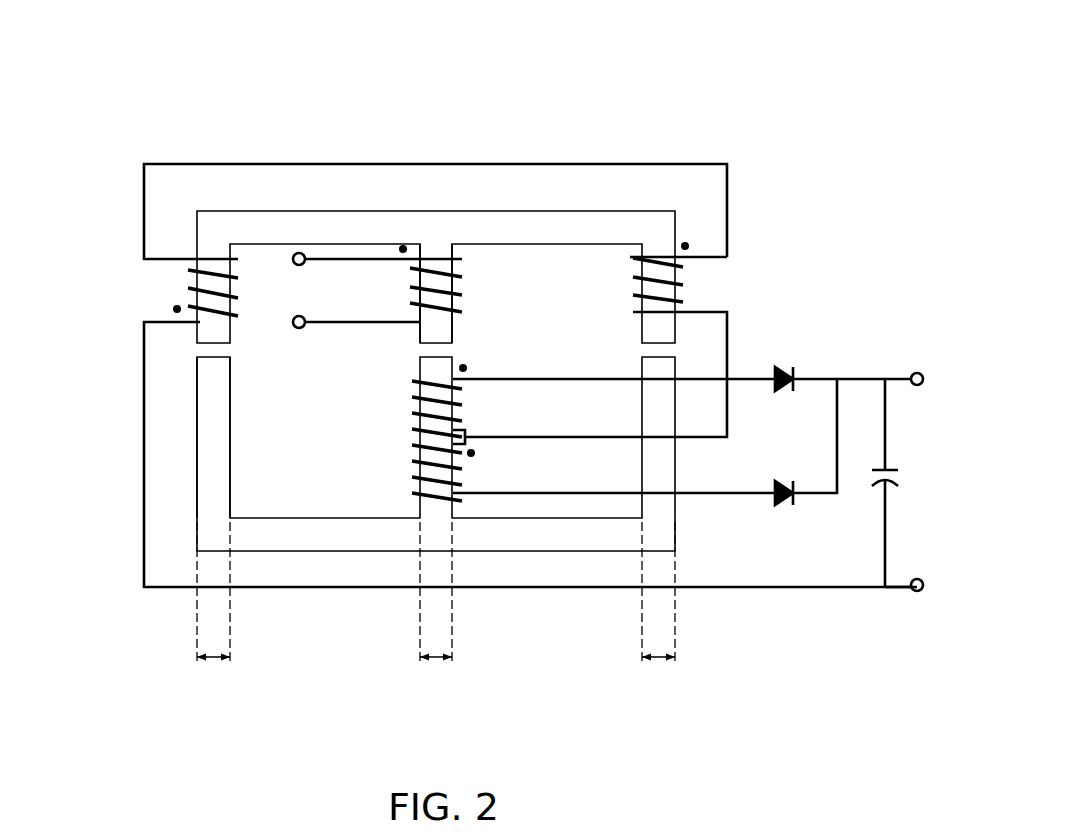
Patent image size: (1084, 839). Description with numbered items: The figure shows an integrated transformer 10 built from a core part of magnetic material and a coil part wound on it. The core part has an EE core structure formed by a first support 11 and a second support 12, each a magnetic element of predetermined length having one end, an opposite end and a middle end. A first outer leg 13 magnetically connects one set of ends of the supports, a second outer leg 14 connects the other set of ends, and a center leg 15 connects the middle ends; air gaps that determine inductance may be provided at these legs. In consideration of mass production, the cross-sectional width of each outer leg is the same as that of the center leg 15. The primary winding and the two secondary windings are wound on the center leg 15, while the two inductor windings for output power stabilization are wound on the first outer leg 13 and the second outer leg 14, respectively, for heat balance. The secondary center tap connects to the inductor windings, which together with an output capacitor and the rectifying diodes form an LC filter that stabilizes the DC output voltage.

The transformer 10 is at (478, 29).
The first support 11 is at (488, 223).
The second support 12 is at (518, 532).
The first outer leg 13 is at (213, 437).
The second outer leg 14 is at (667, 293).
The center leg 15 is at (448, 332).